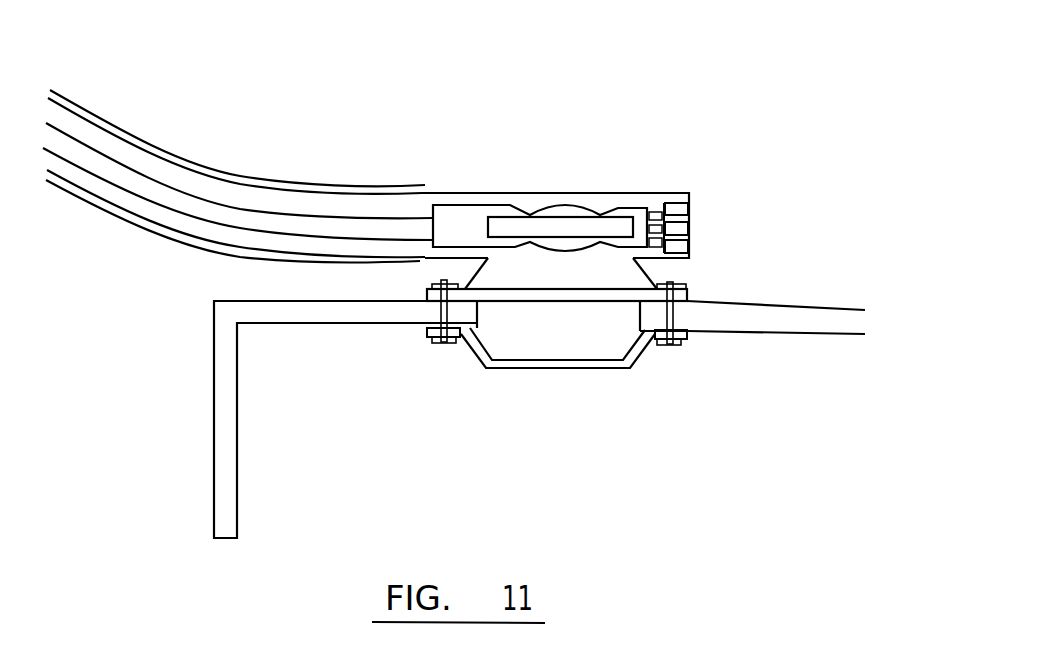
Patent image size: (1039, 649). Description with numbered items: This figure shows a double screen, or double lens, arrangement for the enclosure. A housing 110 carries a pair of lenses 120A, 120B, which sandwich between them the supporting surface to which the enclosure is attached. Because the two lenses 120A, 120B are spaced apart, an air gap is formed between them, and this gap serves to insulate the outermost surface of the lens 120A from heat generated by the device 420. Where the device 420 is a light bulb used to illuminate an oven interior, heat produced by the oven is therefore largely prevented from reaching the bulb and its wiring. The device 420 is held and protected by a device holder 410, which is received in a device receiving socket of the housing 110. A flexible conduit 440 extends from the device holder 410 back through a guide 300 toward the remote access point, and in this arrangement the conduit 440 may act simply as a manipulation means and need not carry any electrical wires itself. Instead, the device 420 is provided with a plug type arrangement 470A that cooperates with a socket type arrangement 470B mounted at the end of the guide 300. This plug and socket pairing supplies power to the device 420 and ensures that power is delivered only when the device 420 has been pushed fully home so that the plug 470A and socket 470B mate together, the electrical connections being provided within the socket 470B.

The housing 110 is at (645, 274).
The outer lens 120A is at (545, 366).
The inner lens 120B is at (588, 299).
The guide 300 is at (285, 185).
The device holder 410 is at (460, 223).
The device 420 is at (570, 205).
The flexible conduit 440 is at (158, 192).
The plug type arrangement 470A is at (651, 211).
The socket type arrangement 470B is at (689, 210).